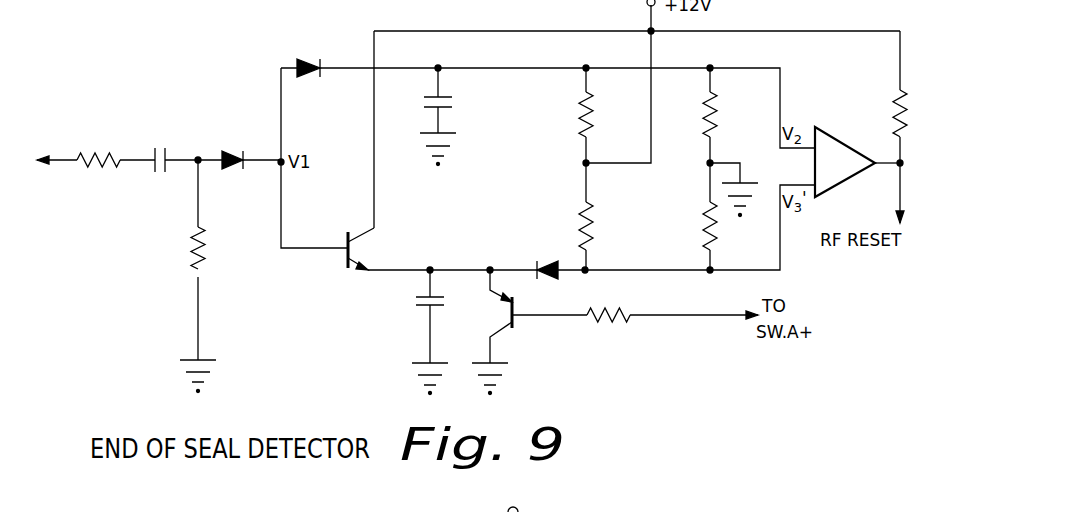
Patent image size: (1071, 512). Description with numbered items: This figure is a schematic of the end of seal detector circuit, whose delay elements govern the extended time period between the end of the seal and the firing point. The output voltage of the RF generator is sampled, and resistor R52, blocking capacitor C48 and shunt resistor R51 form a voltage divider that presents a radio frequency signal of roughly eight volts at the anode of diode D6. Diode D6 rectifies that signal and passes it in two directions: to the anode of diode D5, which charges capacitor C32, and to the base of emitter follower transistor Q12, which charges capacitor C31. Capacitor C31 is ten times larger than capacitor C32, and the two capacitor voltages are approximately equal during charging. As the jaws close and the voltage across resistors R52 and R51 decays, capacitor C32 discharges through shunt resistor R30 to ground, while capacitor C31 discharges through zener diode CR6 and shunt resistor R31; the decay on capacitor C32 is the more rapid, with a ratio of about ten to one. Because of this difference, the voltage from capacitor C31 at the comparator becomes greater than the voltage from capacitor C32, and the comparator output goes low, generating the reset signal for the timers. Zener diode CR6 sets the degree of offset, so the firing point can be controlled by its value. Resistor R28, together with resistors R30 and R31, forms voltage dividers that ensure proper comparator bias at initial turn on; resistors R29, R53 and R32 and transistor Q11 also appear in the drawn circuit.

The resistor R52 is at (95, 162).
The blocking capacitor C48 is at (155, 162).
The diode D6 is at (233, 163).
The shunt resistor R51 is at (175, 276).
The diode D5 is at (315, 70).
The capacitor C32 is at (415, 117).
The resistor R28 is at (605, 115).
The resistor 47K R29 is at (605, 216).
The shunt resistor R30 is at (707, 142).
The shunt resistor R31 is at (682, 216).
The emitter follower transistor Q12 is at (341, 264).
The zener diode CR6 is at (535, 254).
The capacitor C31 is at (388, 332).
The transistor MPS2909 Q11 is at (526, 332).
The resistor 10K R53 is at (672, 312).
The resistor 3.3K R32 is at (874, 127).